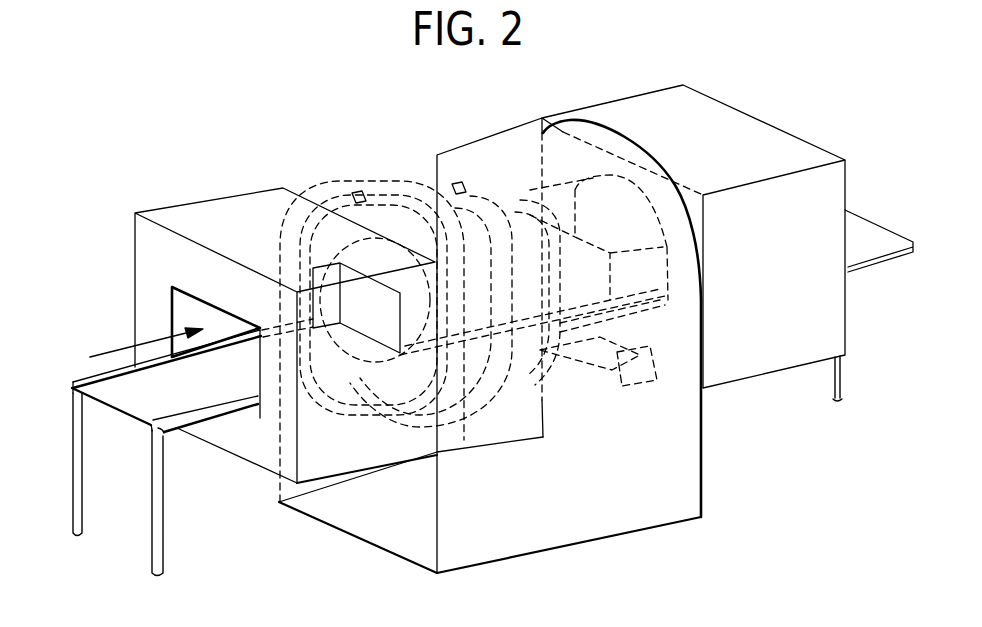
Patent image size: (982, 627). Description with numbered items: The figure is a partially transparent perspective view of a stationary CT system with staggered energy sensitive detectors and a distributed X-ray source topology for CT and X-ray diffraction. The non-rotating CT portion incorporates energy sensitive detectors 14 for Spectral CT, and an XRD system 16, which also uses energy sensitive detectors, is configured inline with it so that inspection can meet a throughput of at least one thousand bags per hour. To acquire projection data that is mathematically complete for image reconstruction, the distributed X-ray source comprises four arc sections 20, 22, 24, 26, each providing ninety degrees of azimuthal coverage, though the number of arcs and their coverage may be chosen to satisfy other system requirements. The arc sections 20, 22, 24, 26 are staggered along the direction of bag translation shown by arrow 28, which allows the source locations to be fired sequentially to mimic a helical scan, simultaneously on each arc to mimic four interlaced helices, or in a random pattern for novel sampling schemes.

The energy sensitive detectors 14 is at (498, 215).
The XRD system 16 is at (640, 378).
The arc section 20 is at (442, 213).
The arc section 22 is at (464, 440).
The arc section 24 is at (527, 341).
The arc section 26 is at (390, 262).
The arrow 28 is at (123, 345).